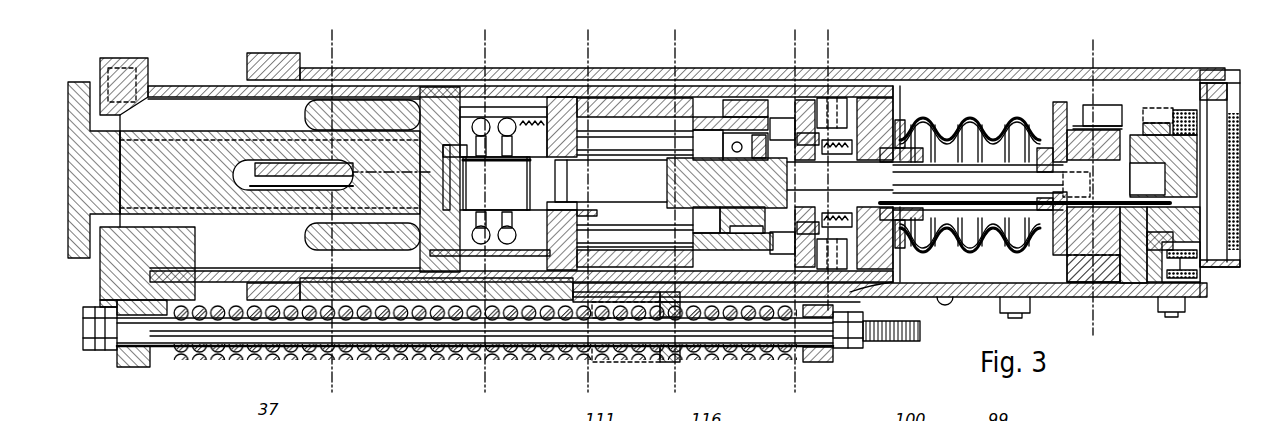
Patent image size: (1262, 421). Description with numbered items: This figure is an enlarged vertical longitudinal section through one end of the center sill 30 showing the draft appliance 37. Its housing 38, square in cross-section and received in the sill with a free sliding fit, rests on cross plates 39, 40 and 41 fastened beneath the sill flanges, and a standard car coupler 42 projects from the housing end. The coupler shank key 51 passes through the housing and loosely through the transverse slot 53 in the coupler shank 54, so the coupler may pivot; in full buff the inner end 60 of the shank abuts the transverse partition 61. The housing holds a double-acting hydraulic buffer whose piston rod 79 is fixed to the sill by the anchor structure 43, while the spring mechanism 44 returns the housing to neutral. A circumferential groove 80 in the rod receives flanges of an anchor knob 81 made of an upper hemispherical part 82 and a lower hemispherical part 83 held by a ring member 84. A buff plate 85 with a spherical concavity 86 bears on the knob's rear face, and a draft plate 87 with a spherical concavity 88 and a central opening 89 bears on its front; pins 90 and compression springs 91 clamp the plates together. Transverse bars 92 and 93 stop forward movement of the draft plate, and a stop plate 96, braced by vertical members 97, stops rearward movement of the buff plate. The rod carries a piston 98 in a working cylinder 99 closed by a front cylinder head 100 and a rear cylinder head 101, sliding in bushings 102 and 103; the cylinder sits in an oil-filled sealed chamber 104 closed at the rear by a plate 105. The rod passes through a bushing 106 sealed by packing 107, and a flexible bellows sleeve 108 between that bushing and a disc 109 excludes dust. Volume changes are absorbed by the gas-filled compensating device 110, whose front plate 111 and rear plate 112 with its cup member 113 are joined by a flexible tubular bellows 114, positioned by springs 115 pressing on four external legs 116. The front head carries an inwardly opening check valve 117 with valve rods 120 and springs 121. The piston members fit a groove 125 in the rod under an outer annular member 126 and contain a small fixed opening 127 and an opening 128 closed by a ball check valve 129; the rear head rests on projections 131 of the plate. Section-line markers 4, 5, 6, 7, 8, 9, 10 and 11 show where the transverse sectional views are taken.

The section line 4- 4 is at (318, 377).
The section line 5- 5 is at (471, 377).
The section line 6- 6 is at (573, 377).
The section line 7- 7 is at (660, 377).
The section indicator 8 is at (782, 186).
The section line 9- 9 is at (809, 377).
The section line 10- 10 is at (845, 300).
The section line 11- 11 is at (1113, 323).
The center sill 30 is at (918, 69).
The draft appliance 37 is at (148, 91).
The housing 38 is at (205, 86).
The cross plate 39 is at (410, 300).
The cross plate 40 is at (950, 299).
The cross plate 41 is at (1207, 278).
The car coupler 42 is at (77, 81).
The anchor structure 43 is at (1165, 208).
The spring mechanism 44 is at (248, 354).
The coupler shank key 51 is at (270, 190).
The transverse slot 53 is at (238, 190).
The coupler shank 54 is at (172, 133).
The inner end of coupler shank 60 is at (410, 100).
The transverse partition 61 is at (428, 143).
The piston rod 79 is at (945, 135).
The circumferential groove 80 is at (1102, 115).
The anchor knob 81 is at (1150, 225).
The upper hemispherical part 82 is at (1160, 108).
The lower hemispherical part 83 is at (1190, 276).
The ring member 84 is at (1180, 110).
The buff plate 85 is at (1217, 253).
The spherical concavity 86 is at (1128, 202).
The draft plate 87 is at (1117, 278).
The spherical concavity 88 is at (1150, 123).
The central opening 89 is at (1088, 124).
The pins 90 is at (1155, 267).
The compression springs 91 is at (1210, 83).
The transverse bar 92 is at (1085, 130).
The transverse bar 93 is at (1067, 235).
The stop plate 96 is at (1217, 264).
The vertical members 97 is at (1232, 85).
The piston 98 is at (700, 117).
The working cylinder 99 is at (640, 98).
The front cylinder head 100 is at (560, 97).
The rear cylinder head 101 is at (832, 98).
The bushing 102 is at (600, 150).
The bushing 103 is at (808, 148).
The sealed chamber 104 is at (770, 100).
The plate 105 is at (870, 98).
The bushing 106 is at (915, 145).
The packing 107 is at (850, 156).
The flexible bellows sleeve 108 is at (1040, 148).
The disc 109 is at (1060, 102).
The compensating device 110 is at (483, 117).
The front plate 111 is at (467, 107).
The rear plate 112 is at (520, 125).
The cup member 113 is at (495, 205).
The flexible tubular bellows 114 is at (455, 253).
The springs 115 is at (517, 245).
The external legs 116 is at (455, 312).
The check valve 117 is at (597, 236).
The valve rods 120 is at (590, 212).
The springs 121 is at (560, 190).
The groove 125 is at (729, 220).
The outer annular member 126 is at (693, 245).
The small fixed opening 127 is at (700, 240).
The opening 128 is at (727, 146).
The ball check valve 129 is at (735, 100).
The projections 131 is at (838, 291).